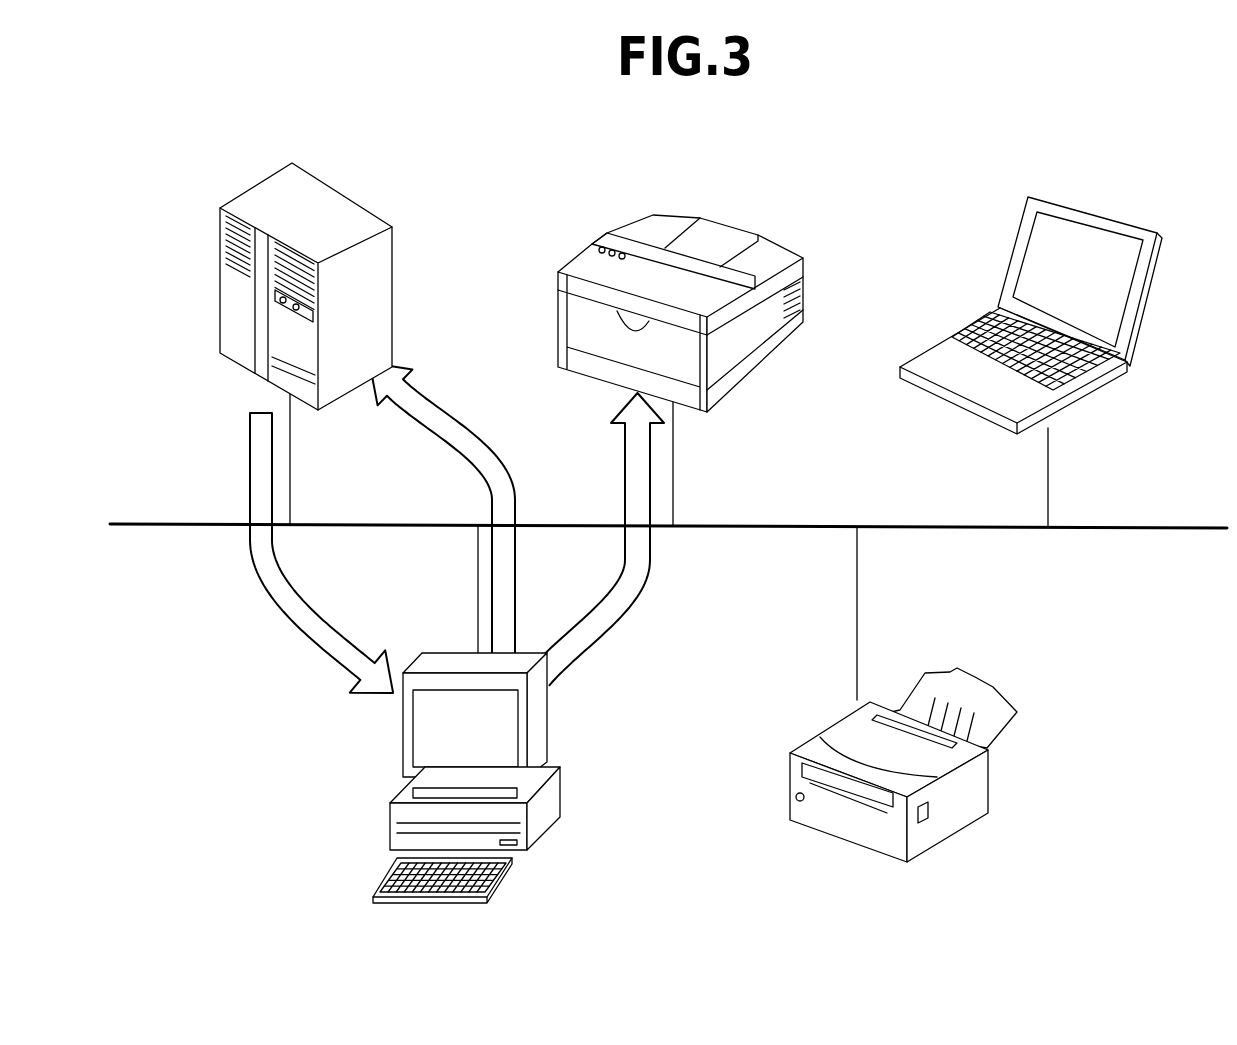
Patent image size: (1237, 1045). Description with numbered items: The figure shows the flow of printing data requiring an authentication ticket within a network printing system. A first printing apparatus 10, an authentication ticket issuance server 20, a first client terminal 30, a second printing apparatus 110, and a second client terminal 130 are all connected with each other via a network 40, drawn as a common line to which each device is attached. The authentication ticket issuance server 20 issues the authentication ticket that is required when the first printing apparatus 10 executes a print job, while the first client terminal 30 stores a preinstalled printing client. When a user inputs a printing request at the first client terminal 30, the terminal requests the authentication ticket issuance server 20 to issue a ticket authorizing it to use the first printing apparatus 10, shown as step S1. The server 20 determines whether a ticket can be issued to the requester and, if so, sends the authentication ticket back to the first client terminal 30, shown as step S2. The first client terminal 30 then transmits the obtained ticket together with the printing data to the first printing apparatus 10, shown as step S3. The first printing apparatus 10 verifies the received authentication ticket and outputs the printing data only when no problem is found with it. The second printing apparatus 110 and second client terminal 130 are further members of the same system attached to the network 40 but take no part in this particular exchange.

The first printing apparatus 10 is at (725, 222).
The authentication ticket issuance server 20 is at (340, 192).
The first client terminal 30 is at (553, 826).
The network 40 is at (1157, 526).
The second printing apparatus 110 is at (832, 838).
The second client terminal 130 is at (1092, 208).
The step S1 is at (456, 432).
The step S2 is at (294, 623).
The step S3 is at (617, 613).